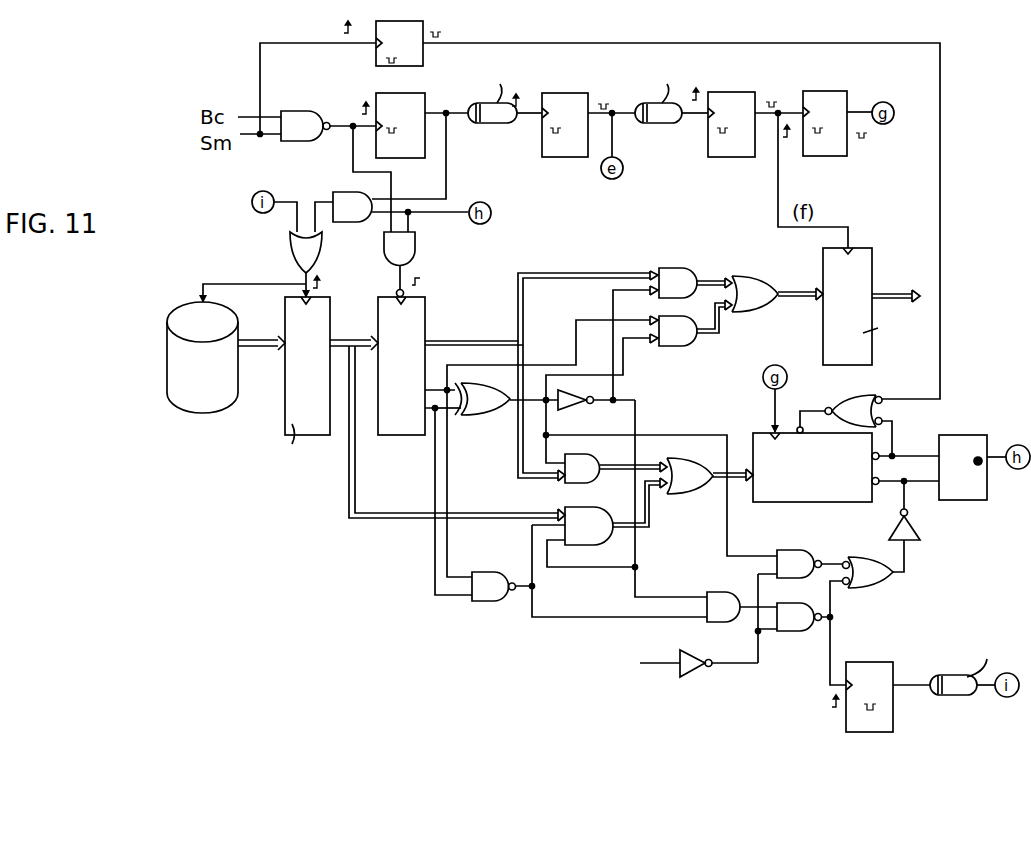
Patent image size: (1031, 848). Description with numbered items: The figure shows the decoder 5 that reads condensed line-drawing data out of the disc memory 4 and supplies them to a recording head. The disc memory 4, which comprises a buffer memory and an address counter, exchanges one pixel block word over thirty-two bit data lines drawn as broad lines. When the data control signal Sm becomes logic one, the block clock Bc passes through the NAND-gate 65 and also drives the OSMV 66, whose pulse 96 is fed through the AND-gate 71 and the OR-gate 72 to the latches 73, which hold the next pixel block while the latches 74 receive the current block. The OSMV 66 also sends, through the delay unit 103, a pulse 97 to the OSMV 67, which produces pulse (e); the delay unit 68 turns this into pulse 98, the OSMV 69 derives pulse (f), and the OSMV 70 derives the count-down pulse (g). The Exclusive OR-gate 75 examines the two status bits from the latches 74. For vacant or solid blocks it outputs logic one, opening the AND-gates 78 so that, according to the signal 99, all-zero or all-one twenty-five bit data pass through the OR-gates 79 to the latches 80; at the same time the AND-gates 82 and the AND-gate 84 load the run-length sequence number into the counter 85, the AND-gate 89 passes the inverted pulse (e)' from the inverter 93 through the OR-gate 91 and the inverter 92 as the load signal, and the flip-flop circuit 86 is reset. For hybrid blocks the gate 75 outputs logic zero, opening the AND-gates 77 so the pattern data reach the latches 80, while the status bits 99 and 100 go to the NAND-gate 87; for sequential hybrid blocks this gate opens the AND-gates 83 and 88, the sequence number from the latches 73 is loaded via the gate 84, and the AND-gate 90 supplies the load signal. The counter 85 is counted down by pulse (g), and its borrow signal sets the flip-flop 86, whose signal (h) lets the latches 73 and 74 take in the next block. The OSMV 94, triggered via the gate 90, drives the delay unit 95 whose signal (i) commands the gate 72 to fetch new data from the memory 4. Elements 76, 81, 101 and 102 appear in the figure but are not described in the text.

The disc memory 4 is at (212, 412).
The decoder 5 is at (418, 608).
The NAND-gate 65 is at (298, 118).
The OSMV 66 is at (393, 127).
The OSMV 67 is at (585, 152).
The delay unit 68 is at (670, 118).
The OSMV 69 is at (712, 150).
The OSMV 70 is at (807, 152).
The AND-gate 71 is at (340, 192).
The OR-gate 72 is at (313, 257).
The latches 73 is at (308, 436).
The latches 74 is at (393, 379).
The Exclusive OR-gate 75 is at (472, 414).
The AND gate 76 is at (407, 249).
The AND-gates 77 is at (680, 270).
The AND-gates 78 is at (671, 348).
The OR-gates 79 is at (757, 280).
The latches 80 is at (878, 306).
The inverter 81 is at (570, 406).
The AND-gates 82 is at (583, 476).
The AND-gates 83 is at (616, 511).
The AND-gate 84 is at (686, 487).
The counter 85 is at (846, 467).
The flip-flop circuit 86 is at (947, 500).
The NAND-gate 87 is at (483, 601).
The AND-gates 88 is at (728, 593).
The AND-gate 89 is at (788, 553).
The AND-gate 90 is at (802, 633).
The OR-gate 91 is at (870, 583).
The inverter 92 is at (917, 528).
The inverter 93 is at (694, 676).
The OSMV 94 is at (887, 673).
The delay unit 95 is at (967, 692).
The pulse 96 is at (452, 177).
The pulse 97 is at (532, 118).
The pulse 98 is at (698, 118).
The signal 99 is at (468, 365).
The status data signal 100 is at (435, 462).
The flip-flop 101 is at (400, 66).
The NOR gate 102 is at (857, 395).
The delay unit 103 is at (505, 121).